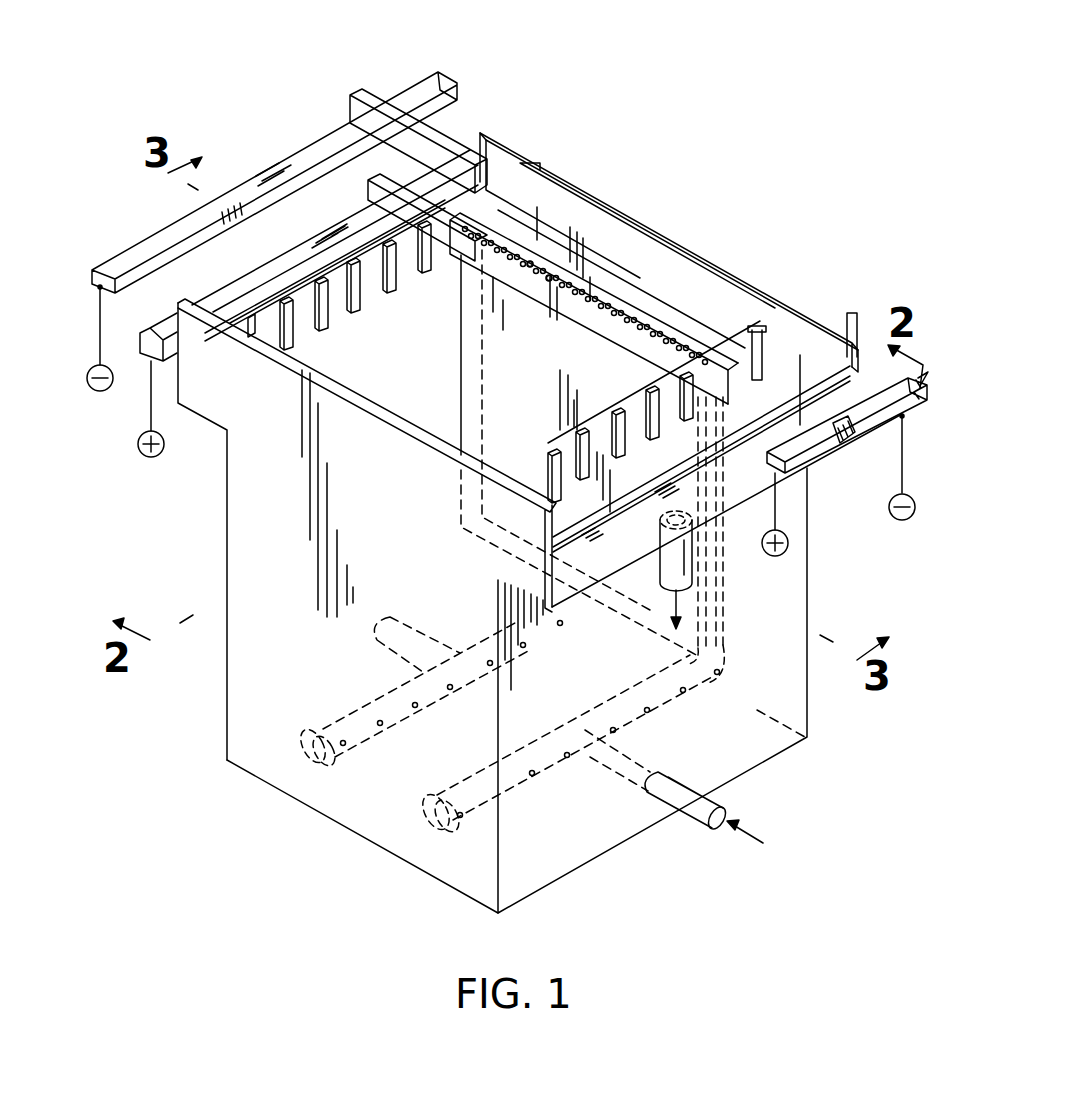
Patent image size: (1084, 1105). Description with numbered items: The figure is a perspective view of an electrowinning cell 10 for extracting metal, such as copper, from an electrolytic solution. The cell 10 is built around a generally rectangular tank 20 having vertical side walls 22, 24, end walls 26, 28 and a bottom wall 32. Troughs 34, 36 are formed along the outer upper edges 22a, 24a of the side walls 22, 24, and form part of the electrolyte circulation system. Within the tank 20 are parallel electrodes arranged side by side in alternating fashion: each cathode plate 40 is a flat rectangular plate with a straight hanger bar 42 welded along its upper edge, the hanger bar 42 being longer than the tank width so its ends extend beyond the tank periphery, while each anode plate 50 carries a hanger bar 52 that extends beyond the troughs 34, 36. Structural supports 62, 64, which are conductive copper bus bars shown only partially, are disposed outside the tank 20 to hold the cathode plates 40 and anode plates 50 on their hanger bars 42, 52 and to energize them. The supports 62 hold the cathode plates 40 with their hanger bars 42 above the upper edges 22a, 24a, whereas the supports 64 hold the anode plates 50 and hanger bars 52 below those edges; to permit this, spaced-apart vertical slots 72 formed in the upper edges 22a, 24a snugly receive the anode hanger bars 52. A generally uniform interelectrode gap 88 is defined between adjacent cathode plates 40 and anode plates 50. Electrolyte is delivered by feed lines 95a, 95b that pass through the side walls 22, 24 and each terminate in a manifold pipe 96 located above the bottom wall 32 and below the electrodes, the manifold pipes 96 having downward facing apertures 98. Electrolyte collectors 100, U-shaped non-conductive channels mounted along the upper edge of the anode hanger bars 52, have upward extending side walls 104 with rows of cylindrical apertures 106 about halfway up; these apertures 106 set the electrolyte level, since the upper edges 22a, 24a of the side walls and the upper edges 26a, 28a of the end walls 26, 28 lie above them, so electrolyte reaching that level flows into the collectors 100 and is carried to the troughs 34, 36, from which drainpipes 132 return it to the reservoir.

The electrowinning cell 10 is at (660, 62).
The tank 20 is at (222, 556).
The side wall 22 is at (303, 327).
The upper edge of side wall 22a is at (293, 293).
The side wall 24 is at (778, 604).
The upper edge of side wall 24a is at (560, 440).
The end wall 26 is at (243, 677).
The upper edge of end wall 26a is at (407, 437).
The end wall 28 is at (727, 263).
The upper edge of end wall 28a is at (760, 287).
The bottom wall 32 is at (415, 868).
The trough 34 is at (507, 146).
The trough 36 is at (572, 520).
The cathode plate 40 is at (637, 297).
The hanger bar 42 is at (552, 220).
The anode plate 50 is at (493, 312).
The hanger bar 52 is at (590, 317).
The structural support 62 is at (407, 97).
The structural support 64 is at (353, 227).
The vertical slot 72 is at (357, 317).
The interelectrode gap 88 is at (722, 612).
The feed line 95a is at (380, 635).
The feed line 95b is at (702, 823).
The manifold pipe 96 is at (367, 707).
The aperture 98 is at (348, 747).
The electrolyte collector 100 is at (662, 314).
The side wall of collector 104 is at (510, 260).
The aperture 106 is at (550, 277).
The drainpipe 132 is at (680, 560).